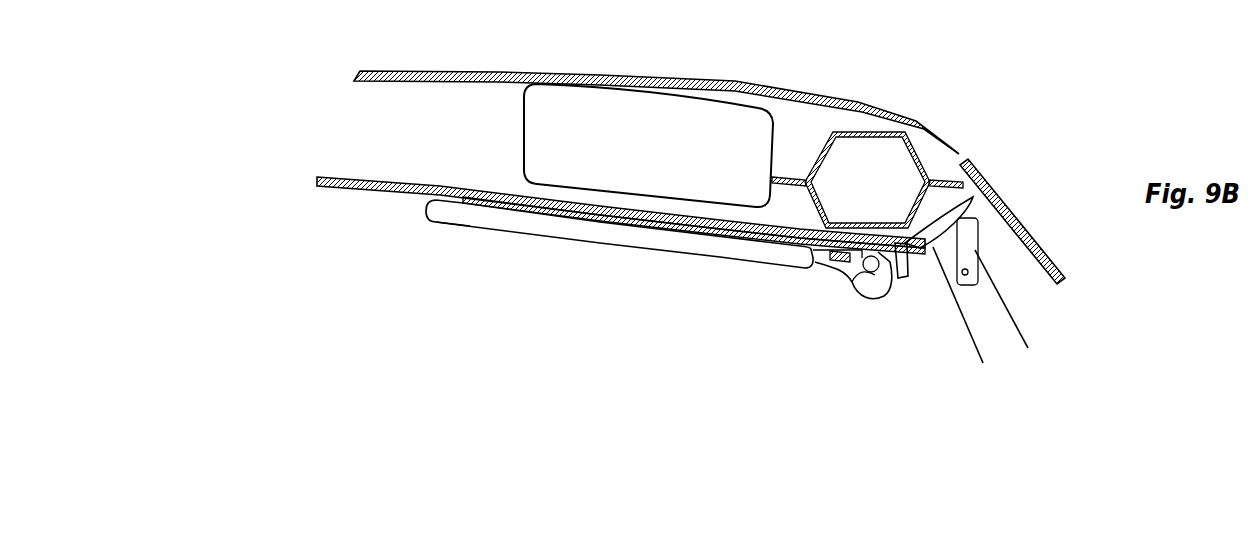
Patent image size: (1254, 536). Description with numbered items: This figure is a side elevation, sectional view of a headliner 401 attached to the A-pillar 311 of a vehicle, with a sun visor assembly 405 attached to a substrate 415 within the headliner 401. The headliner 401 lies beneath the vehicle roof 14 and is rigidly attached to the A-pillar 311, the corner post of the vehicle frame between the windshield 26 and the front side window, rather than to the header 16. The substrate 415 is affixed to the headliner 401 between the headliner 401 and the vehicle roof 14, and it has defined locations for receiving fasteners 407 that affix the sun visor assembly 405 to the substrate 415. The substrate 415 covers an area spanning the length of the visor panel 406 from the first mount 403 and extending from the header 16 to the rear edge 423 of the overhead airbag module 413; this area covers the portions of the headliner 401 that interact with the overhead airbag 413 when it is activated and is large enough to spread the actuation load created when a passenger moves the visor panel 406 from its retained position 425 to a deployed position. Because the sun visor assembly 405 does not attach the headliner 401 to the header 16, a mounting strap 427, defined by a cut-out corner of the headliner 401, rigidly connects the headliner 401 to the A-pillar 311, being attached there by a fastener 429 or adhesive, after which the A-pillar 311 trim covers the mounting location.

The vehicle roof 14 is at (735, 81).
The header 16 is at (880, 158).
The windshield 26 is at (987, 178).
The A-pillar 311 is at (992, 305).
The headliner 401 is at (540, 203).
The first mount 403 is at (863, 288).
The sun visor assembly 405 is at (868, 300).
The visor panel 406 is at (632, 241).
The fastener 407 is at (907, 255).
The overhead airbag module 413 is at (602, 103).
The substrate 415 is at (707, 234).
The rear edge 423 is at (523, 122).
The retained position 425 is at (457, 227).
The mounting strap 427 is at (956, 247).
The fastener 429 is at (968, 272).